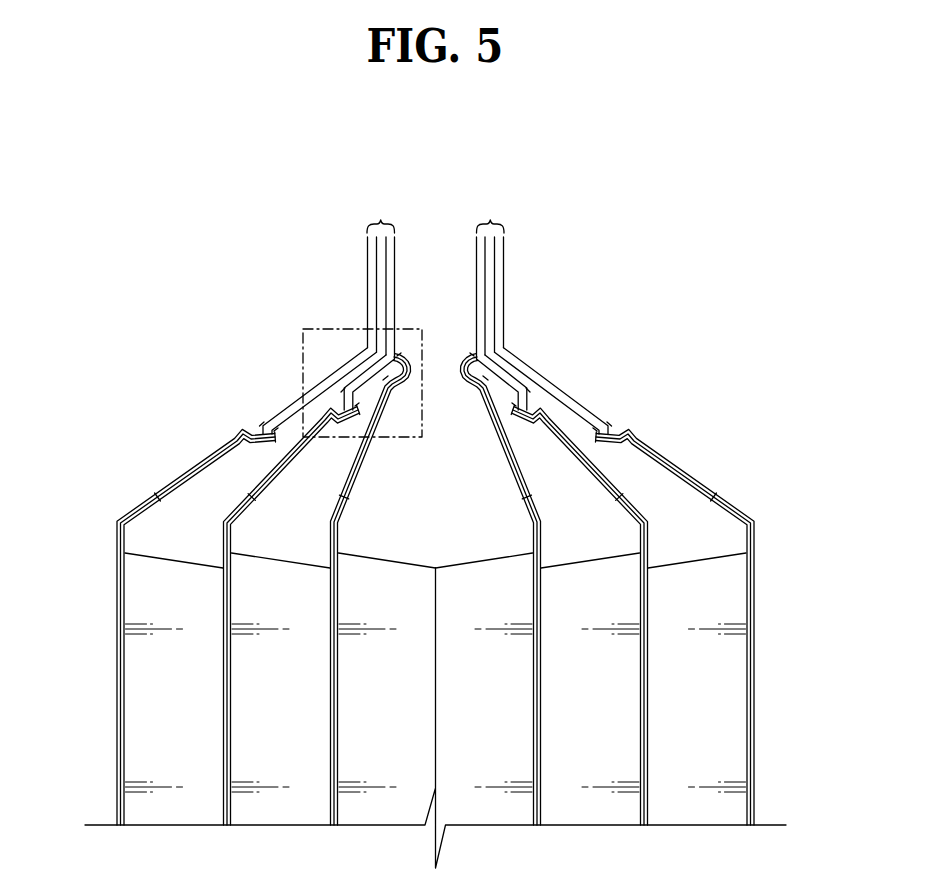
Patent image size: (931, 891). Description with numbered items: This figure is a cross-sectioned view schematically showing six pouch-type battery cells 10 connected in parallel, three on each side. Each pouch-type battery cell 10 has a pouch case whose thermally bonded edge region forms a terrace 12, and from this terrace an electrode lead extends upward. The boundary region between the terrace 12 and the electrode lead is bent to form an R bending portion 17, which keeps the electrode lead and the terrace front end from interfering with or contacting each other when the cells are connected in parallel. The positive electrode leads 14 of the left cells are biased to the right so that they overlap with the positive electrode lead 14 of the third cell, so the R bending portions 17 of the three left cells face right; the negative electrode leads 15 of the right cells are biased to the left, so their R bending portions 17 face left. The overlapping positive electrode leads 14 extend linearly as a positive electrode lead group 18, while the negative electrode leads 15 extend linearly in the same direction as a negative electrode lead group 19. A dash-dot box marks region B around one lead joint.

The pouch-type battery cell 10 is at (701, 855).
The terrace 12 is at (698, 480).
The positive electrode lead 14 is at (287, 403).
The negative electrode lead 15 is at (587, 400).
The R bending portion 17 is at (610, 432).
The positive electrode lead group 18 is at (381, 276).
The negative electrode lead group 19 is at (490, 276).
The enlarged region B is at (398, 437).